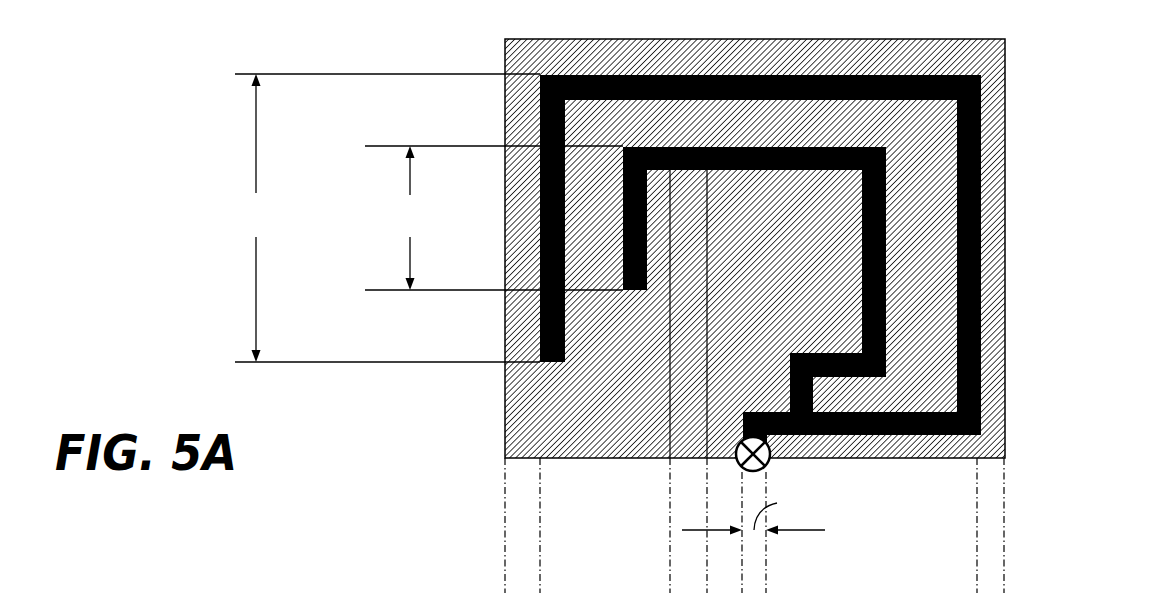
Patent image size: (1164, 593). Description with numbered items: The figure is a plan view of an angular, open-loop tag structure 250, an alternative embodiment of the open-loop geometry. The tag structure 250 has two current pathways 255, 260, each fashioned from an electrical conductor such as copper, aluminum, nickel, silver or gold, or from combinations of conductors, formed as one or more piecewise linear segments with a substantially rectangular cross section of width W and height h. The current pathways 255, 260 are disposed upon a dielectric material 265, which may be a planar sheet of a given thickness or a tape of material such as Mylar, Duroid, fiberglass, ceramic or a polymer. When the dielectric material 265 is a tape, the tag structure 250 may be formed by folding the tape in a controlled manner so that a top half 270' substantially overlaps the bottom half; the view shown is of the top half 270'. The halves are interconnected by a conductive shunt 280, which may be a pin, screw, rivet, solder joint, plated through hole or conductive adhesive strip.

The open loop tag structure 250 is at (393, 427).
The current pathway 255 is at (887, 298).
The current pathway 260 is at (985, 187).
The dielectric material 265 is at (1005, 117).
The top half 270' is at (830, 248).
The shunt 280 is at (772, 449).